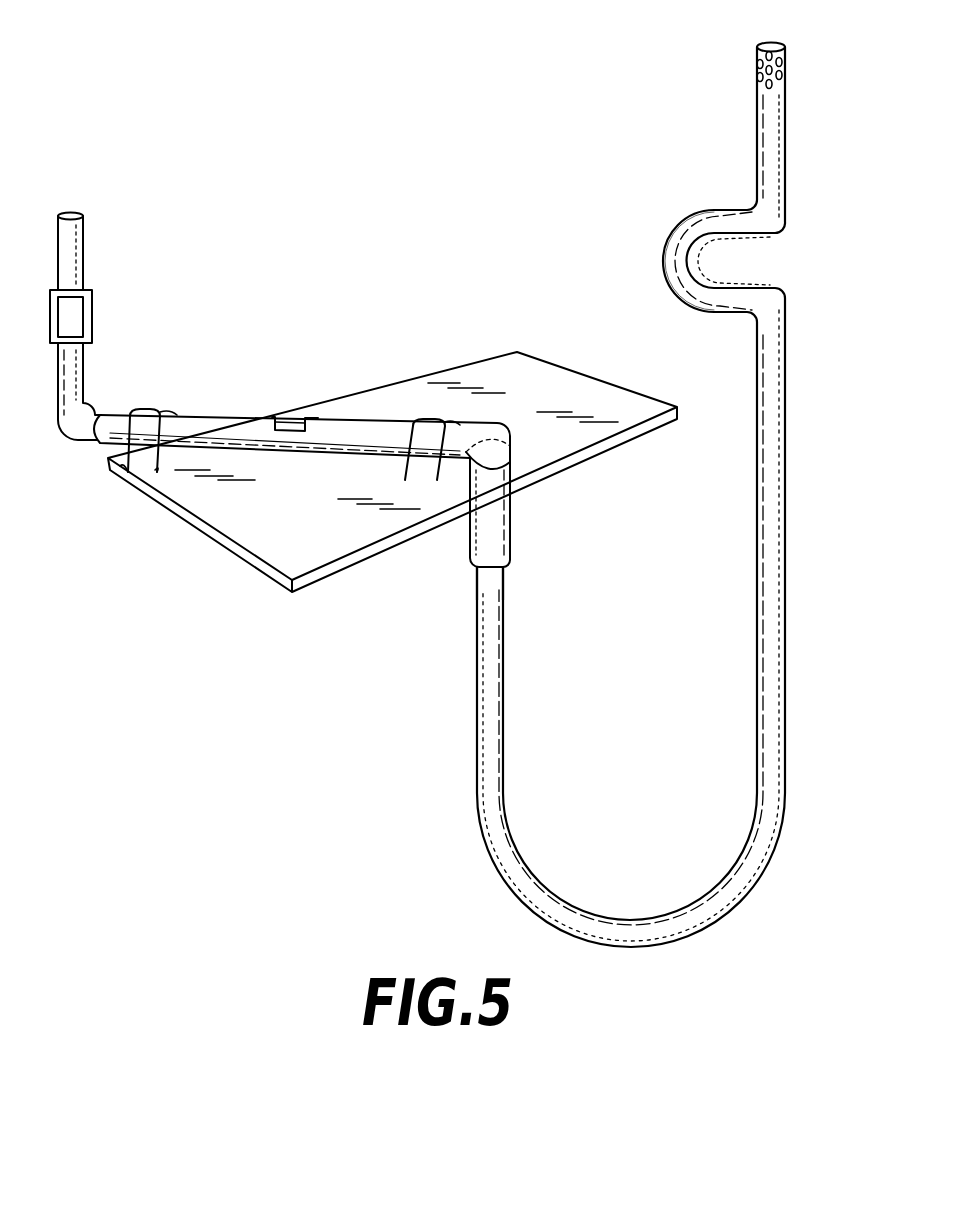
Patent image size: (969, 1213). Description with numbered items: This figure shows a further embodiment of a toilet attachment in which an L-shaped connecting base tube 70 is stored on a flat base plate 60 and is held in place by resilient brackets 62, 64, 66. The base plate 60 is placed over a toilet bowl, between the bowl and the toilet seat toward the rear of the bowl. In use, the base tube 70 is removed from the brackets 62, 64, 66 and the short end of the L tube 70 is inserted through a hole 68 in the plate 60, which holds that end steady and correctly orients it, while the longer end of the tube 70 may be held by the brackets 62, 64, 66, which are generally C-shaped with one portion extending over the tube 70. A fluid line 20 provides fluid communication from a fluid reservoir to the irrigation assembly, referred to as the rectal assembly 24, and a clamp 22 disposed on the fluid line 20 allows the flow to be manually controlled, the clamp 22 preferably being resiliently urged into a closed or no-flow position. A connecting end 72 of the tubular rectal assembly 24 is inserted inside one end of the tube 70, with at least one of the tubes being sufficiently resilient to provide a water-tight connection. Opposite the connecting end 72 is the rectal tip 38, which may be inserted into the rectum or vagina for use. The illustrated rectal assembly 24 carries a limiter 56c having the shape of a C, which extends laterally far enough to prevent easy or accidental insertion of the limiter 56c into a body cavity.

The fluid line 20 is at (73, 232).
The clamp 22 is at (93, 313).
The irrigation assembly 24 is at (787, 538).
The rectal tip 38 is at (781, 44).
The limiter 56c is at (667, 241).
The base plate 60 is at (218, 512).
The resilient bracket 62 is at (152, 418).
The resilient bracket 64 is at (300, 420).
The resilient bracket 66 is at (435, 425).
The hole 68 is at (522, 452).
The connecting base tube 70 is at (347, 422).
The connecting end 72 is at (503, 578).